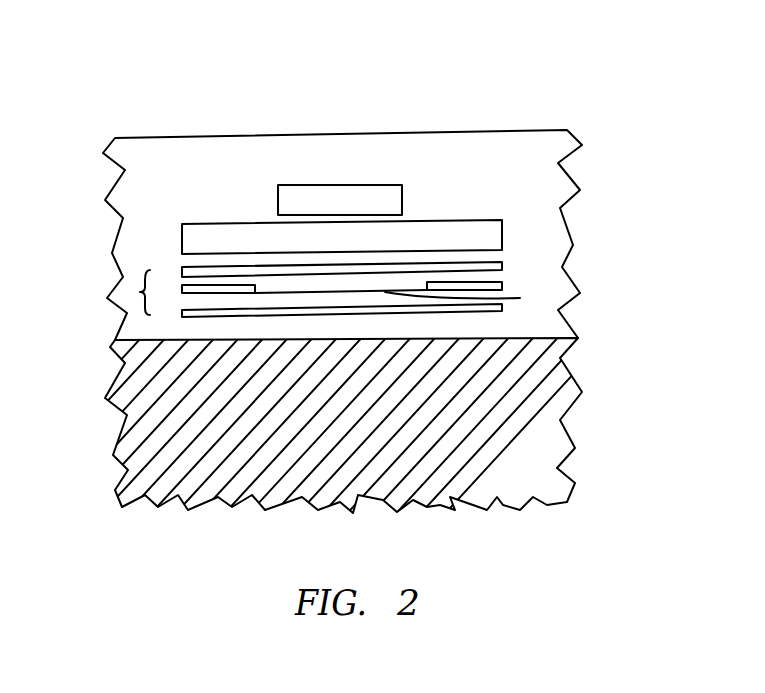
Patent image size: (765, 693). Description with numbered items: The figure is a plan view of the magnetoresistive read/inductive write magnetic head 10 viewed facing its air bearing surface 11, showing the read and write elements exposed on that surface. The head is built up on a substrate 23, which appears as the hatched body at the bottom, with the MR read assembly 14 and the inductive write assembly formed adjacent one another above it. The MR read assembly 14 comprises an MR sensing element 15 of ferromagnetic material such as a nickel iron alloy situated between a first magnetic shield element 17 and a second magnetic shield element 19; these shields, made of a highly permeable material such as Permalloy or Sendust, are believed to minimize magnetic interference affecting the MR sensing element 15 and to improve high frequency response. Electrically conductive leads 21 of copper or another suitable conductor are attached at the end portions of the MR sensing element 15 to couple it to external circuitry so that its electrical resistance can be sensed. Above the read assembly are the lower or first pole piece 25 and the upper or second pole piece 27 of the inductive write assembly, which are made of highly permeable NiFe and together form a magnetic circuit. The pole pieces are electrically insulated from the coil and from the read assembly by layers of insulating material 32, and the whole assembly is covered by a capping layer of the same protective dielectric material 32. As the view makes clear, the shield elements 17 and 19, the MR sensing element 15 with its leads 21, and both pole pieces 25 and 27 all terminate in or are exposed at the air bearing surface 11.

The magnetic head 10 is at (378, 86).
The air bearing surface 11 is at (225, 168).
The MR read assembly 14 is at (142, 293).
The MR sensing element 15 is at (520, 298).
The first magnetic shield element 17 is at (502, 311).
The second magnetic shield element 19 is at (502, 262).
The electrically conductive leads 21 is at (183, 292).
The substrate 23 is at (500, 425).
The first pole piece 25 is at (502, 236).
The second pole piece 27 is at (402, 198).
The insulating material layers 32 is at (173, 188).